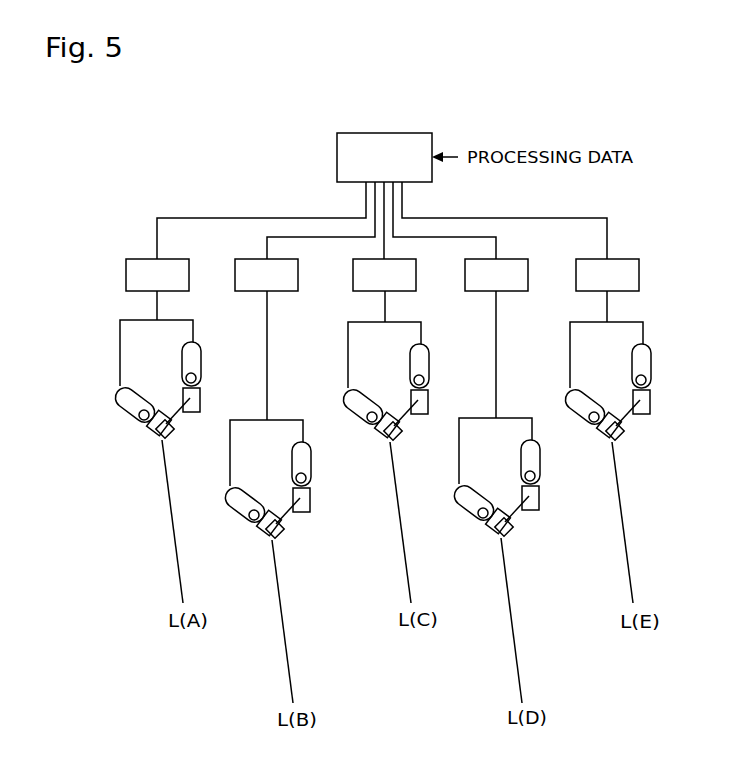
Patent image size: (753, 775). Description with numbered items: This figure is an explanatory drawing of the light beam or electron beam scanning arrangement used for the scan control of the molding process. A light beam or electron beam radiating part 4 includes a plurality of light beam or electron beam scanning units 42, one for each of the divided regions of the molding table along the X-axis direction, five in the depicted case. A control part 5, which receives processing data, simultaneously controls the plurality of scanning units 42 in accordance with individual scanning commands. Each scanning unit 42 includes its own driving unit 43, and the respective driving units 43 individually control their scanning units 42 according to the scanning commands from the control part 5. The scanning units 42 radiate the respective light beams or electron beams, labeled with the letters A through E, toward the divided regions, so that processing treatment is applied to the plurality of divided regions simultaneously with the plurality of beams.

The control part 5 is at (337, 152).
The driving unit 43 is at (126, 263).
The light beam or electron beam scanning unit 42 is at (117, 421).
The light beam or electron beam radiating part 4 is at (364, 431).